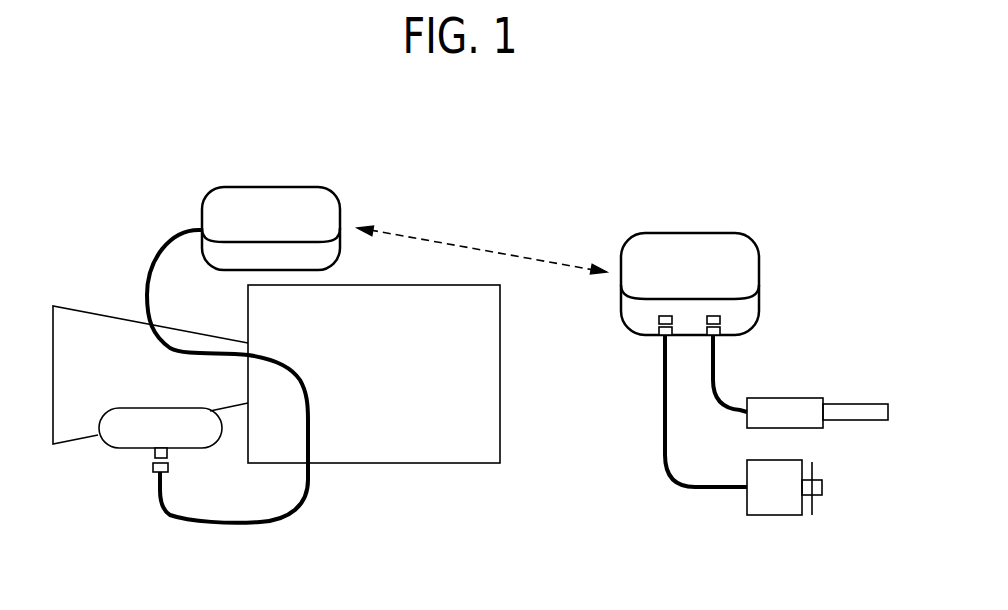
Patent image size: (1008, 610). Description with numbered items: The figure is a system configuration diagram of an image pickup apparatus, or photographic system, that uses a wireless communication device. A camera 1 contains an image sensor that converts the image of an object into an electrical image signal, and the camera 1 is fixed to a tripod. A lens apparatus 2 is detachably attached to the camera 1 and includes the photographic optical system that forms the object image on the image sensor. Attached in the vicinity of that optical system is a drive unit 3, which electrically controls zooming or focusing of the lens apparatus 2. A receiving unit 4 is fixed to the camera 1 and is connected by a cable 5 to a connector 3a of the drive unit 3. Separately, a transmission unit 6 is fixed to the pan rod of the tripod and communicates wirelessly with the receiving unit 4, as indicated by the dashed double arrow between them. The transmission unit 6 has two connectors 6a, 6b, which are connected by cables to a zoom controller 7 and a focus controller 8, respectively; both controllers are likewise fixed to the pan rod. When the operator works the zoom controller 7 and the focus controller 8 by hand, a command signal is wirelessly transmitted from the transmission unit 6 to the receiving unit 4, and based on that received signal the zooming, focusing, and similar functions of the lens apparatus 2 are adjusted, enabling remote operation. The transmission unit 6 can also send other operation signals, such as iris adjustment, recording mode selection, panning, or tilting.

The camera 1 is at (395, 452).
The lens apparatus 2 is at (82, 320).
The drive unit 3 is at (113, 442).
The connector 3a is at (150, 453).
The receiving unit 4 is at (280, 198).
The cable 5 is at (170, 238).
The transmission unit 6 is at (678, 240).
The connector 6a is at (723, 318).
The connector 6b is at (658, 318).
The zoom controller 7 is at (788, 407).
The focus controller 8 is at (770, 510).